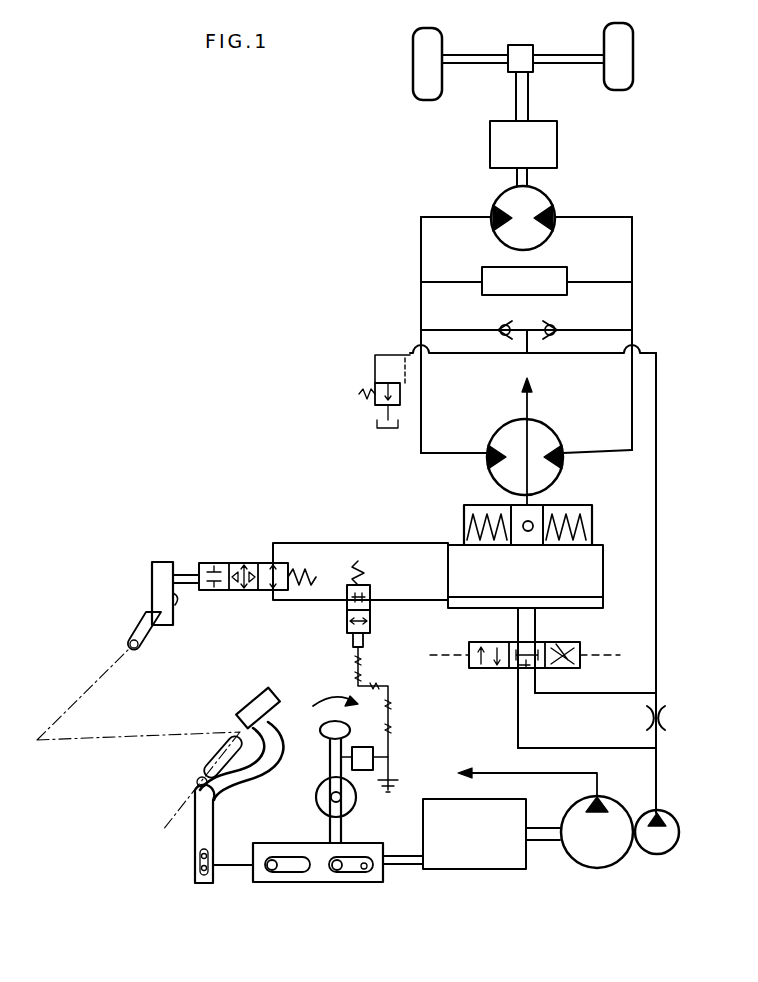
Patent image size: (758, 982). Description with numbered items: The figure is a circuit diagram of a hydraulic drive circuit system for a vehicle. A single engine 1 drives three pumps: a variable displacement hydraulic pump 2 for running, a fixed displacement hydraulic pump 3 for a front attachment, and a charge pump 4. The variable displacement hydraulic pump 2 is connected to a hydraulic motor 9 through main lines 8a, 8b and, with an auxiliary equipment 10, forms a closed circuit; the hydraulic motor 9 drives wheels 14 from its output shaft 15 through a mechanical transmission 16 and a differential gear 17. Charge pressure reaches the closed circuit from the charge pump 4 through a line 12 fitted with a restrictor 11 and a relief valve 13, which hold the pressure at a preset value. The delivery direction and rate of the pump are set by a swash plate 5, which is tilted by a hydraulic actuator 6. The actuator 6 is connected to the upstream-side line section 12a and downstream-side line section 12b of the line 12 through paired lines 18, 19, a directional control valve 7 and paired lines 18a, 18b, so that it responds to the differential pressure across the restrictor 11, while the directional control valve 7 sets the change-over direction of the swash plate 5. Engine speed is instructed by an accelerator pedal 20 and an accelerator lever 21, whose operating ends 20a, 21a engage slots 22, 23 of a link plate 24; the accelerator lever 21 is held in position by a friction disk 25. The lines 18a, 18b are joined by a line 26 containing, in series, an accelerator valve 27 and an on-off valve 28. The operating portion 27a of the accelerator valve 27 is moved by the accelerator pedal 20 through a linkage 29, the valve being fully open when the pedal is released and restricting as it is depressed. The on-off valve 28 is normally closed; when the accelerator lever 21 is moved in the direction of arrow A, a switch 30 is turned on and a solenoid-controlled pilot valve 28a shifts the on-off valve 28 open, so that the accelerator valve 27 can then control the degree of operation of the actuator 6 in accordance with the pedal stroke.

The engine 1 is at (466, 868).
The variable displacement hydraulic pump 2 is at (552, 434).
The fixed displacement hydraulic pump 3 is at (584, 868).
The charge pump 4 is at (667, 830).
The displacement varying mechanism (swash plate) 5 is at (535, 412).
The hydraulic actuator 6 is at (592, 527).
The directional control valve 7 is at (580, 644).
The main line 8a is at (632, 440).
The main line 8b is at (421, 418).
The hydraulic motor 9 is at (552, 196).
The auxiliary equipment 10 is at (555, 267).
The restrictor 11 is at (668, 718).
The line 12 is at (656, 583).
The upstream-side line section 12a is at (656, 778).
The downstream-side line section 12b is at (656, 680).
The relief valve 13 is at (370, 382).
The wheels 14 is at (634, 39).
The output shaft 15 is at (512, 180).
The mechanical transmission 16 is at (557, 146).
The differential gear 17 is at (522, 42).
The line 18 is at (518, 716).
The line 18a is at (448, 583).
The line 18b is at (602, 589).
The line 19 is at (586, 696).
The accelerator pedal 20 is at (256, 708).
The operating end 20a is at (272, 868).
The accelerator lever 21 is at (328, 750).
The operating end 21a is at (336, 868).
The slot 22 is at (292, 860).
The slot 23 is at (365, 870).
The link plate 24 is at (254, 882).
The friction disk 25 is at (316, 792).
The line 26 is at (380, 538).
The accelerator valve 27 is at (234, 558).
The operating portion 27a is at (182, 558).
The on-off valve 28 is at (340, 586).
The solenoid-controlled pilot valve 28a is at (363, 646).
The linkage 29 is at (148, 562).
The switch 30 is at (363, 772).
The arrow (lever control direction) A is at (342, 702).